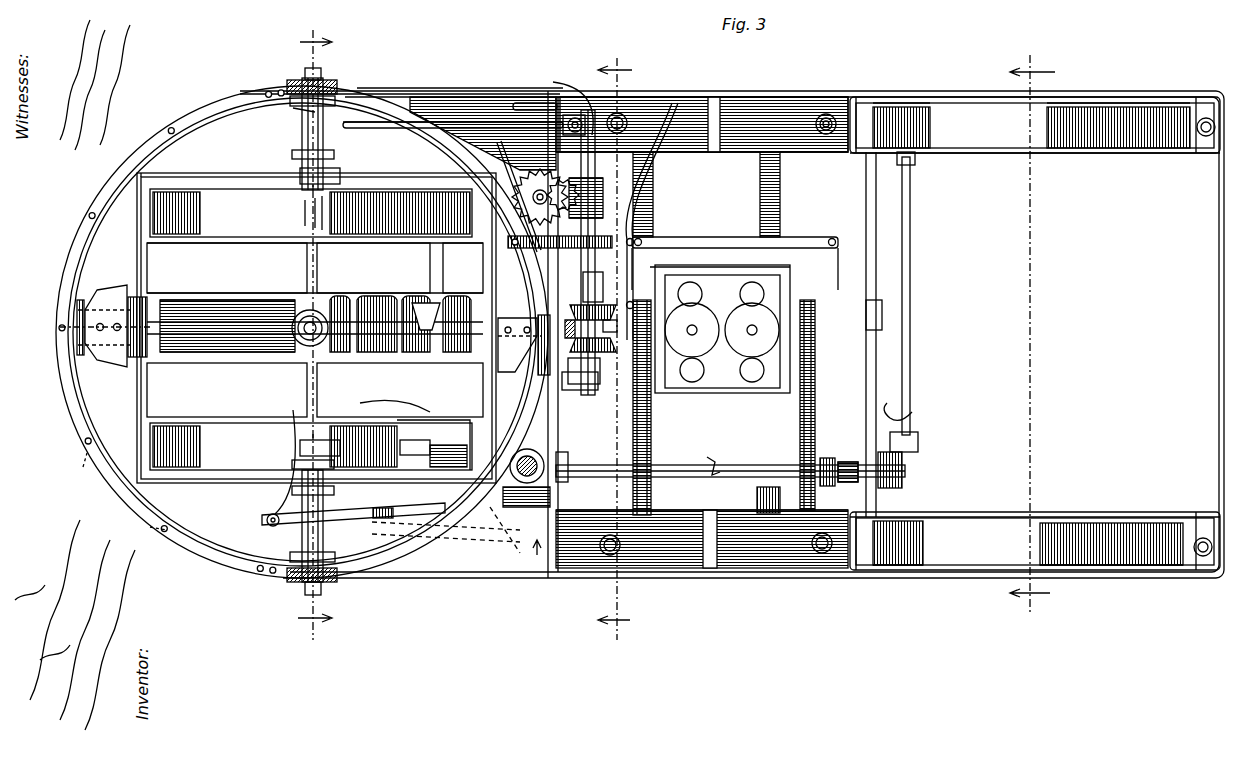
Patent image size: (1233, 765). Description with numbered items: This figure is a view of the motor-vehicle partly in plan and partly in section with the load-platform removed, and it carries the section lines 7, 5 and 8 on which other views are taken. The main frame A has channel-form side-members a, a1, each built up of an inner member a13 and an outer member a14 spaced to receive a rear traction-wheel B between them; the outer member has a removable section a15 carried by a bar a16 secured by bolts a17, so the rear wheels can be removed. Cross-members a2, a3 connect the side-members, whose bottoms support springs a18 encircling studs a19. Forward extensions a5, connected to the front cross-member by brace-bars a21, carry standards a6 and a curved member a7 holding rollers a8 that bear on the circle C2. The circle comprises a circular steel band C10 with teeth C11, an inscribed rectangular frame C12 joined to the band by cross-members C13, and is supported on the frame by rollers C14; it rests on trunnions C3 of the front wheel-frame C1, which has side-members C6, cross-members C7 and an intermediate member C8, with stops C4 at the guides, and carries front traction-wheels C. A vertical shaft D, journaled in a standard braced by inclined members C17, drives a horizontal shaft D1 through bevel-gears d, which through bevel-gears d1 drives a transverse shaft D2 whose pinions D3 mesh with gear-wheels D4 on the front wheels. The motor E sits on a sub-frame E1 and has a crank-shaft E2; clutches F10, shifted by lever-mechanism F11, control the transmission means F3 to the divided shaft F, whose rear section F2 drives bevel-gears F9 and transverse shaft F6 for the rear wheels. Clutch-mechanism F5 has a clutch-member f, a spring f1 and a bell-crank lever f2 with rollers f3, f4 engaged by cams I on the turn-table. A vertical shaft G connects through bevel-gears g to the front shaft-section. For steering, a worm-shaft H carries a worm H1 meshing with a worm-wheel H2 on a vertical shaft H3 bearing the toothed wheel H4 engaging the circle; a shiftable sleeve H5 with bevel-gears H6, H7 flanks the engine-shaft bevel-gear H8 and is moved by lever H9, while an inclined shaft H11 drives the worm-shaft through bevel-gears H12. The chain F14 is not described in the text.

The section line 7 is at (315, 334).
The section line 5 is at (615, 349).
The section line 8 is at (1032, 332).
The cross-member a2 is at (1222, 265).
The main frame A is at (634, 110).
The forward extension a5 is at (378, 97).
The outer member a14 is at (733, 97).
The side-member a1 is at (788, 97).
The spring a18 is at (822, 115).
The stud a19 is at (824, 137).
The inner member a13 is at (734, 153).
The cross-member a3 is at (854, 334).
The rear traction-wheel B is at (1035, 333).
The bolt a17 is at (862, 97).
The bar a16 is at (918, 97).
The removable section a15 is at (960, 88).
The transverse shaft F6 is at (910, 223).
The bevel-gears F9 is at (915, 433).
The rear section F2 is at (905, 465).
The curved member a7 is at (103, 205).
The roller a8 is at (117, 497).
The circle C2 is at (243, 175).
The standard a6 is at (322, 88).
The circular steel band C10 is at (253, 92).
The teeth C11 is at (296, 108).
The rectangular frame C12 is at (197, 173).
The cross-member C13 is at (303, 151).
The roller C14 is at (332, 580).
The stop C4 is at (332, 166).
The trunnion C3 is at (343, 187).
The front traction-wheel C is at (316, 328).
The front traction-wheel frame C1 is at (213, 240).
The side-member C6 is at (177, 243).
The intermediate longitudinal member C8 is at (228, 293).
The cross-member C7 is at (452, 404).
The inclined member C17 is at (182, 340).
The vertical shaft D is at (300, 318).
The bevel-gears d is at (334, 302).
The horizontal shaft D1 is at (373, 307).
The bevel-gears d1 is at (413, 306).
The transverse shaft D2 is at (431, 391).
The pinion D3 is at (403, 190).
The gear-wheel D4 is at (377, 402).
The cam I is at (114, 292).
The clutch-mechanism F5 is at (427, 523).
The roller f3 is at (292, 512).
The roller f4 is at (370, 528).
The vertical shaft G is at (517, 488).
The bevel-gears g is at (523, 452).
The clutch-shifting lever f2 is at (517, 537).
The brace-bar a21 is at (497, 122).
The inclined shaft H11 is at (460, 120).
The bevel-gears H12 is at (553, 103).
The worm-shaft H is at (597, 180).
The worm H1 is at (597, 203).
The vertical shaft H3 is at (517, 171).
The worm-wheel H2 is at (543, 171).
The toothed wheel H4 is at (537, 208).
The lever H9 is at (554, 255).
The bevel-gear H7 is at (567, 302).
The bevel-gear H8 is at (595, 322).
The bevel-gear H6 is at (592, 367).
The shiftable sleeve H5 is at (578, 336).
The divided shaft F is at (662, 465).
The forward transmission means F3 is at (634, 430).
The chain F14 is at (810, 406).
The engine-shaft clutch F10 is at (660, 293).
The lever-mechanism F11 is at (655, 188).
The motor E is at (714, 318).
The sub-frame E1 is at (781, 214).
The crank-shaft E2 is at (875, 313).
The clutch-member f is at (820, 463).
The spring f1 is at (847, 463).
The side-member a is at (772, 570).